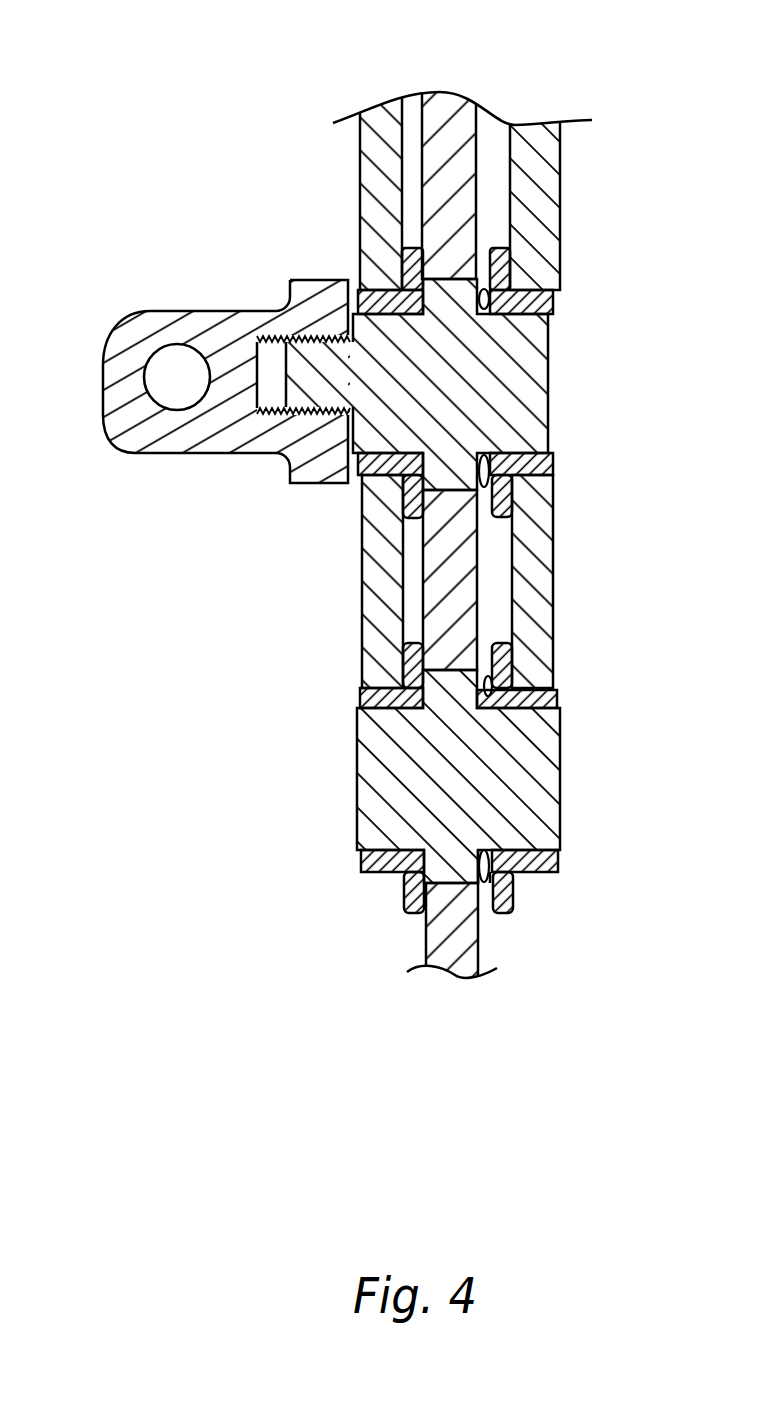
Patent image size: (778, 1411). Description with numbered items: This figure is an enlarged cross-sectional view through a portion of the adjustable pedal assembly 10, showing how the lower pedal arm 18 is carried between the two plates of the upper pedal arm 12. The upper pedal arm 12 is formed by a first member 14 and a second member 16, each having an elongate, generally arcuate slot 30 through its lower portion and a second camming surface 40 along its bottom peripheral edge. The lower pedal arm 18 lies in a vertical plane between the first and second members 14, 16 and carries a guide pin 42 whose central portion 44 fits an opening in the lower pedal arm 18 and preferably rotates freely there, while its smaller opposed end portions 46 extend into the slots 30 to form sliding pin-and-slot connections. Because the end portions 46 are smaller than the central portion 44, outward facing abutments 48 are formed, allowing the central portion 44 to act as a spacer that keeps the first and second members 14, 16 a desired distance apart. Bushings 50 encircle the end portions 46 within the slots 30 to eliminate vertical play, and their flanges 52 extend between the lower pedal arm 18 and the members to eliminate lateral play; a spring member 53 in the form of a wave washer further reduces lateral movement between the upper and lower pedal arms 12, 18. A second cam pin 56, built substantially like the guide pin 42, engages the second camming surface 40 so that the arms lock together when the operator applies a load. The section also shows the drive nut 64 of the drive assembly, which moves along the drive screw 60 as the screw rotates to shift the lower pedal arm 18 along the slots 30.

The adjustable pedal assembly 10 is at (133, 74).
The upper pedal arm 12 is at (564, 588).
The first member 14 is at (535, 640).
The second member 16 is at (362, 627).
The lower pedal arm 18 is at (452, 980).
The slot 30 is at (446, 490).
The second camming surface 40 is at (367, 712).
The guide pin 42 is at (547, 342).
The central portion 44 is at (448, 279).
The end portions 46 is at (380, 298).
The abutments 48 is at (405, 252).
The bushings 50 is at (380, 478).
The flanges 52 is at (405, 520).
The spring member 53 is at (408, 248).
The second cam pin 56 is at (357, 787).
The drive screw 60 is at (174, 411).
The drive nut 64 is at (103, 357).